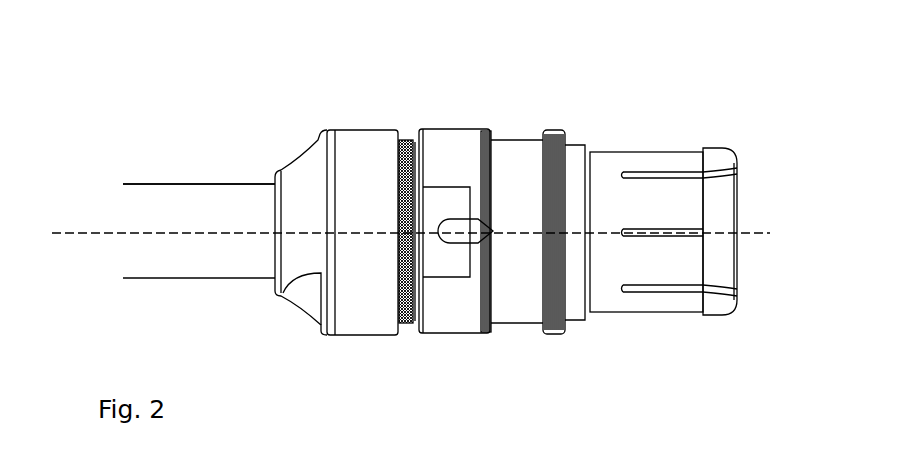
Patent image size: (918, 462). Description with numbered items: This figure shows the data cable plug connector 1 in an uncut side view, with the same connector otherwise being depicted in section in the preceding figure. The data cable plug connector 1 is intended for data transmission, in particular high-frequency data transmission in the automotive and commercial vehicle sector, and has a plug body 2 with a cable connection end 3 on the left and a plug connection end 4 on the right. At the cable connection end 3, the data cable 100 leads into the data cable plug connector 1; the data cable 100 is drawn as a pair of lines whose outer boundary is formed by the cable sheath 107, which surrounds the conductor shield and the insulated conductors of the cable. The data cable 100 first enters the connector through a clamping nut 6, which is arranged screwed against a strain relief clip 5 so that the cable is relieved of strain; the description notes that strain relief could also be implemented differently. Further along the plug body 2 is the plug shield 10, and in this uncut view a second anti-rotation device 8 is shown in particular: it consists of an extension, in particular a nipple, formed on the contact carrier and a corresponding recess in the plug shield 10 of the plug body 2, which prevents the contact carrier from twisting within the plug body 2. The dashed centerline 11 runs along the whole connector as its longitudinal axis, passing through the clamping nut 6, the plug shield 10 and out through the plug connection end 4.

The data cable plug connector 1 is at (382, 85).
The plug body 2 is at (507, 122).
The cable connection end 3 is at (310, 333).
The plug connection end 4 is at (710, 122).
The strain relief clip 5 is at (415, 313).
The clamping nut 6 is at (348, 155).
The second anti-rotation device 8 is at (460, 232).
The plug shield 10 is at (501, 180).
The longitudinal axis 11 is at (103, 230).
The data cable 100 is at (150, 178).
The cable sheath 107 is at (228, 213).